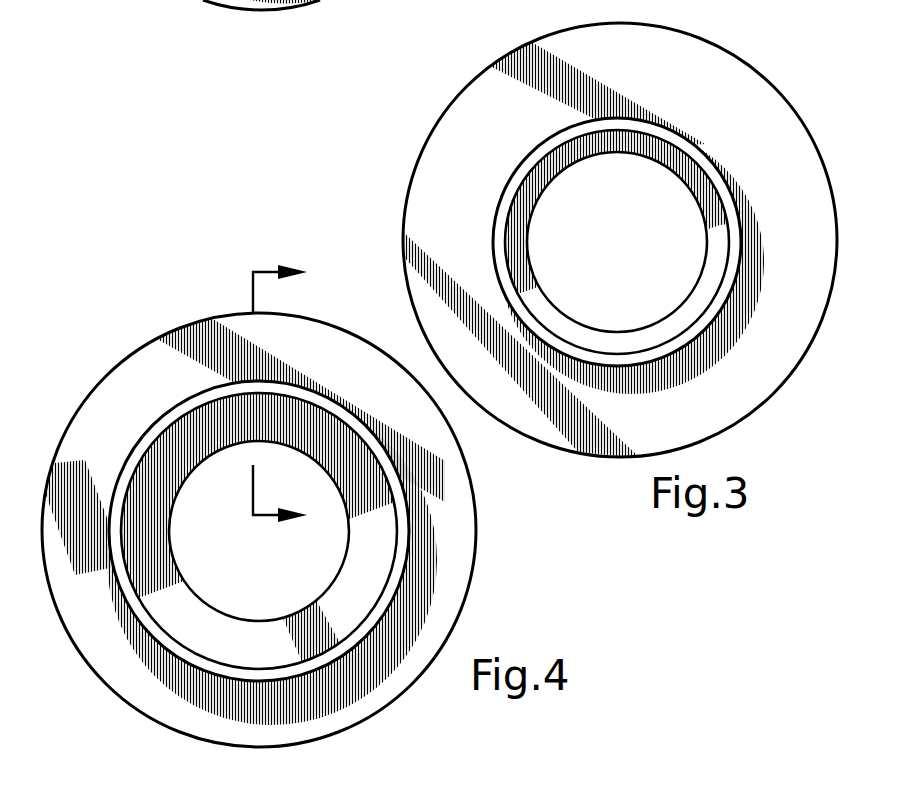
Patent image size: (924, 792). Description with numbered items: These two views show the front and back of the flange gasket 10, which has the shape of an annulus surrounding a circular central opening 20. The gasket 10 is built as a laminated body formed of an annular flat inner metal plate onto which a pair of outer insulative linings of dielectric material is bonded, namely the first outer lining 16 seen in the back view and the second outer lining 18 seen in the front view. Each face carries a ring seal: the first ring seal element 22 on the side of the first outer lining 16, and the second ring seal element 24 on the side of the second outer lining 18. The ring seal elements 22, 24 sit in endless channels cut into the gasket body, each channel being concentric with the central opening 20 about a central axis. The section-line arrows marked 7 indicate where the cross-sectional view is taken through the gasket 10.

In FIG. 3, the gasket 10 is at (582, 240).
In FIG. 4, the gasket 10 is at (289, 505).
In FIG. 4, the first outer lining 16 is at (313, 340).
In FIG. 3, the second outer lining 18 is at (714, 70).
In FIG. 3, the circular central opening 20 is at (631, 244).
In FIG. 4, the circular central opening 20 is at (280, 557).
In FIG. 4, the first ring seal element 22 is at (424, 503).
In FIG. 3, the second ring seal element 24 is at (684, 137).
In FIG. 4, the section line 7- 7 is at (290, 399).